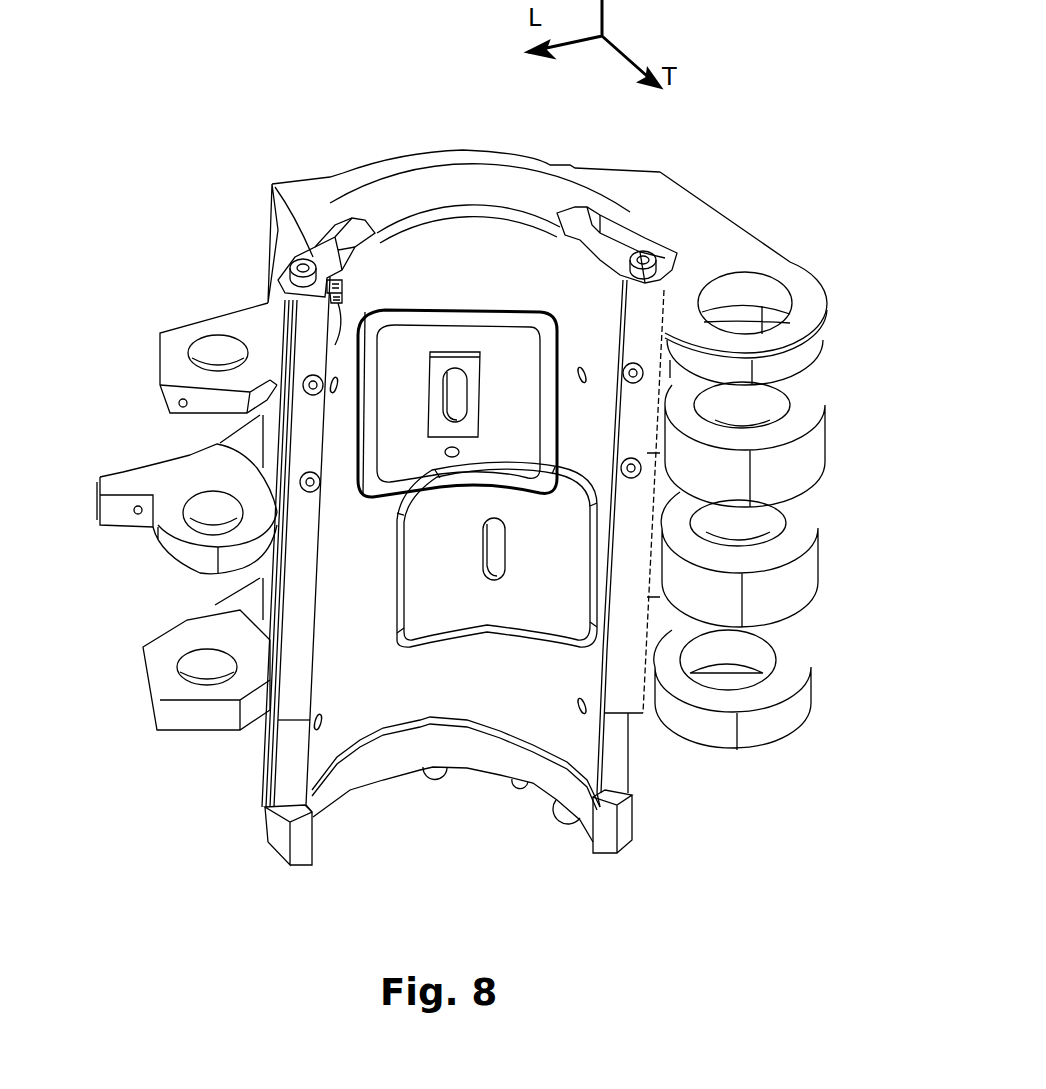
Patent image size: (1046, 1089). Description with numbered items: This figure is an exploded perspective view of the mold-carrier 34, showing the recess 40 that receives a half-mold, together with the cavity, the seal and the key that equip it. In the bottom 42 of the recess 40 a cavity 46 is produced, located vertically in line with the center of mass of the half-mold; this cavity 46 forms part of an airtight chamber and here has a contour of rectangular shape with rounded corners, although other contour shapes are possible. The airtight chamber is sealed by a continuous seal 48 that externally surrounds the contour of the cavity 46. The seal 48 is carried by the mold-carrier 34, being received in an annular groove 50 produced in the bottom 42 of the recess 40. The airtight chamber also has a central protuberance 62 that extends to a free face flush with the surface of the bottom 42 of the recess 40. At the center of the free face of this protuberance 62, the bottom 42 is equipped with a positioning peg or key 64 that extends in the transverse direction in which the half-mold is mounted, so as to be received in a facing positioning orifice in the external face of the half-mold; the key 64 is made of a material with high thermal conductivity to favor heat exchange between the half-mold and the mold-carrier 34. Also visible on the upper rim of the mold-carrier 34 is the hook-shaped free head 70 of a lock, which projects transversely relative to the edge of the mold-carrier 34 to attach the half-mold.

The mold-carrier 34 is at (293, 183).
The recess 40 is at (388, 692).
The bottom of the recess 42 is at (432, 275).
The cavity 46 is at (497, 360).
The seal 48 is at (542, 640).
The annular groove 50 is at (563, 340).
The central protuberance 62 is at (447, 367).
The positioning key 64 is at (492, 555).
The hook-shaped free head 70 is at (337, 312).